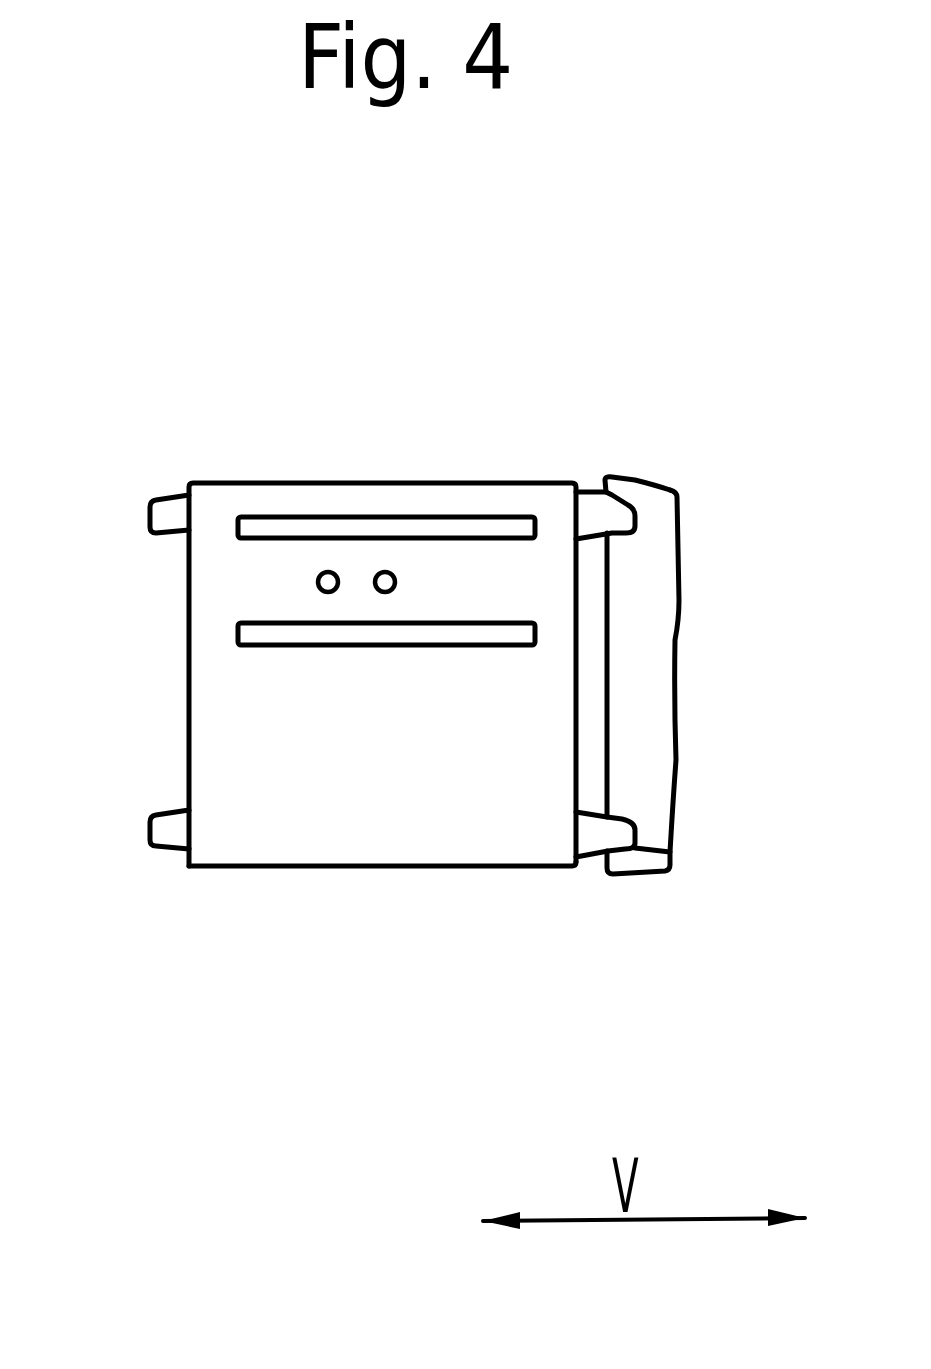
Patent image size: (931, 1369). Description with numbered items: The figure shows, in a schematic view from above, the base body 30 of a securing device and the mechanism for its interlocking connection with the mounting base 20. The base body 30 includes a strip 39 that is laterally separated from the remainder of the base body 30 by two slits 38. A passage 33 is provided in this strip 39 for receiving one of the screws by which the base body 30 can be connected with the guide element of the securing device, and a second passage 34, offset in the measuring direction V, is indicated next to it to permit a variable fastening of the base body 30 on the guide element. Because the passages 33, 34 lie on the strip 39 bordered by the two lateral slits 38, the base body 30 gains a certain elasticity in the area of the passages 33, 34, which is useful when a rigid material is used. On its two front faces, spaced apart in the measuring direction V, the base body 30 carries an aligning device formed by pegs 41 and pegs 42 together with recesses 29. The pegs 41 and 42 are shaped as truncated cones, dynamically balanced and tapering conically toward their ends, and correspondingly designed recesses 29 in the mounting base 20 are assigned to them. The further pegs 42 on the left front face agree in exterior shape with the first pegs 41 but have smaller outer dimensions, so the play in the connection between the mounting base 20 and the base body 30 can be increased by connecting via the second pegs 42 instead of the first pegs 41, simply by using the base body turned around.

The mounting base 20 is at (647, 663).
The recesses 29 is at (637, 503).
The base body 30 is at (352, 866).
The passage 33 is at (385, 571).
The second passage 34 is at (328, 571).
The slits 38 is at (252, 527).
The strip 39 is at (478, 556).
The pegs 41 is at (593, 508).
The pegs 42 is at (160, 500).